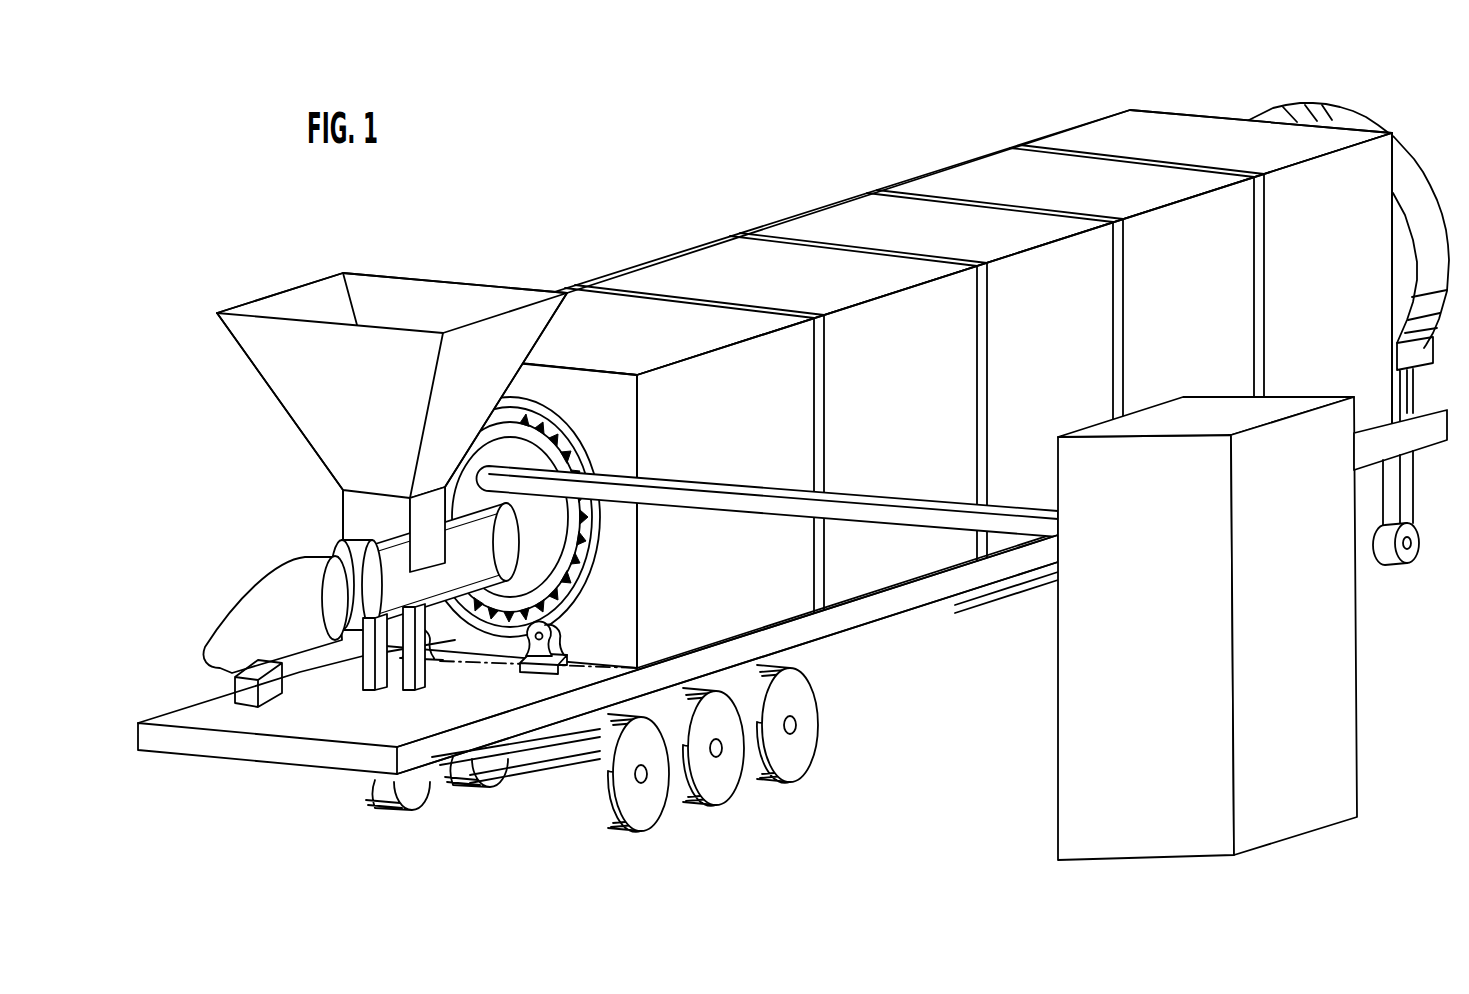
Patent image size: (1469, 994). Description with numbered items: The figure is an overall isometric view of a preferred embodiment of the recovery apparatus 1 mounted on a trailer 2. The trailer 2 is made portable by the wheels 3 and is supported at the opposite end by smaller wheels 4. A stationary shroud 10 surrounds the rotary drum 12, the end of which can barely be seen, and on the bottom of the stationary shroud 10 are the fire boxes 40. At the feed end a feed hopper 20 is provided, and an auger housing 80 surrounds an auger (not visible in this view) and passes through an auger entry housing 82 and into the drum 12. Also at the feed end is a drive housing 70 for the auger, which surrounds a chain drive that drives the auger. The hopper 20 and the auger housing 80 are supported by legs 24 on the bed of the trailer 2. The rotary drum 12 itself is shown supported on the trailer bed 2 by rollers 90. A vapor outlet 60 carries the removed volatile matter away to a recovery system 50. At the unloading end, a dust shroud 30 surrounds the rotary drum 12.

The recovery apparatus 1 is at (692, 150).
The trailer 2 is at (268, 765).
The wheels 3 is at (763, 782).
The smaller wheels 4 is at (1417, 540).
The stationary shroud 10 is at (845, 200).
The rotary drum 12 is at (578, 434).
The feed hopper 20 is at (238, 348).
The legs 24 is at (407, 693).
The dust shroud 30 is at (1404, 140).
The fire boxes 40 is at (953, 600).
The recovery system 50 is at (1358, 638).
The vapor outlet 60 is at (913, 497).
The drive housing 70 is at (258, 577).
The auger housing 80 is at (380, 552).
The auger entry housing 82 is at (512, 532).
The rollers 90 is at (520, 656).